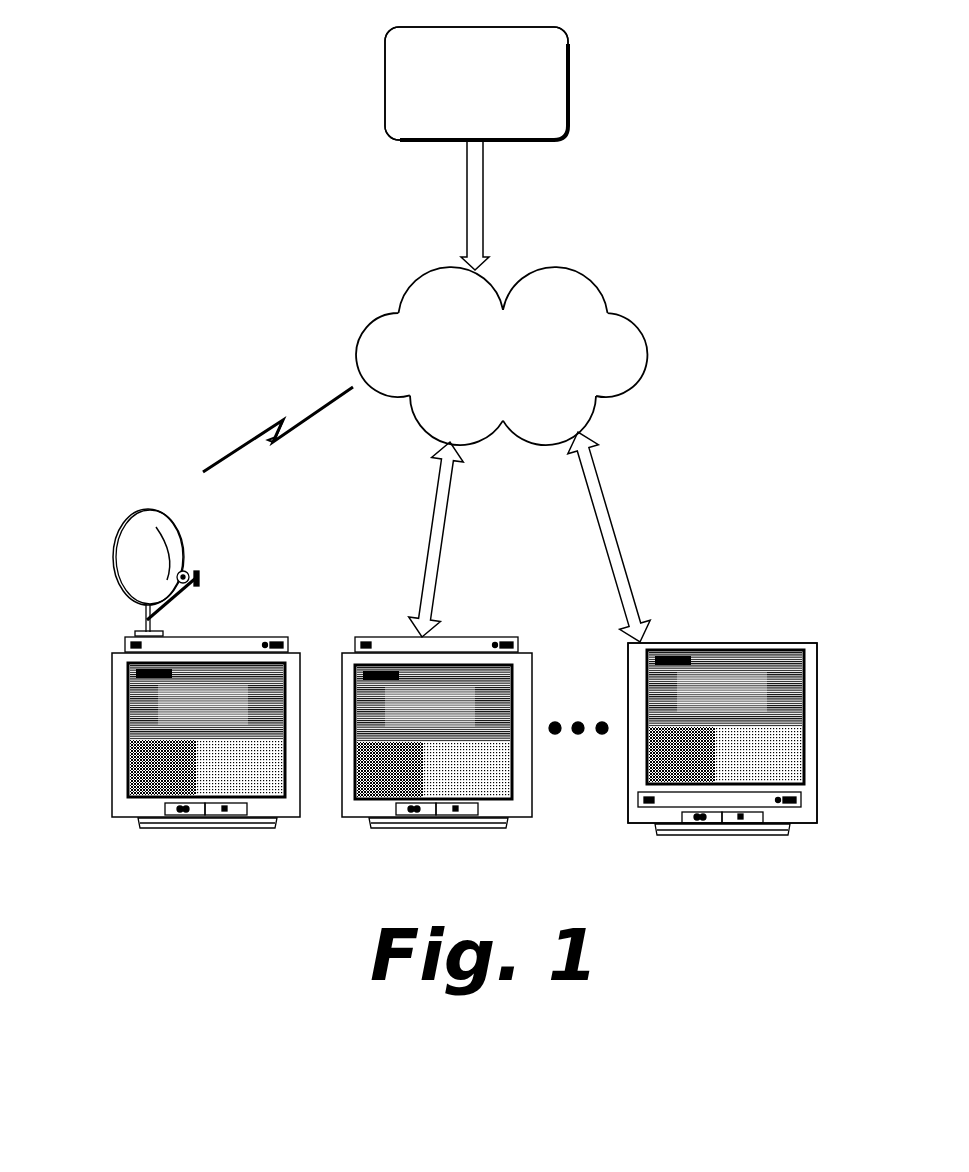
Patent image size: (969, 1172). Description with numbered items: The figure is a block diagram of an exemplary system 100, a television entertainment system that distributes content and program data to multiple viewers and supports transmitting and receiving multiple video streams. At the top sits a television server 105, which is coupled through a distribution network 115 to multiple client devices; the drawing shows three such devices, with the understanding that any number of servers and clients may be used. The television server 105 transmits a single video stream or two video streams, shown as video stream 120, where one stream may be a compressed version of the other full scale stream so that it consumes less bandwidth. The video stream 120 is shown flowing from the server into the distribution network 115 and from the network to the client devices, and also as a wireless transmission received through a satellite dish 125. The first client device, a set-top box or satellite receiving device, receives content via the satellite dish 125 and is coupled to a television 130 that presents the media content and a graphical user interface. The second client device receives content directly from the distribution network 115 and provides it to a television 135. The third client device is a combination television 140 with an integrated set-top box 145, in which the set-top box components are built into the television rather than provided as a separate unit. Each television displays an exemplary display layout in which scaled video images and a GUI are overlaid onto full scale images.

The system 100 is at (270, 75).
The television server 105 is at (476, 83).
The distribution network 115 is at (501, 356).
The video stream 120 is at (483, 207).
The satellite dish 125 is at (181, 541).
The television 130 is at (118, 738).
The television 135 is at (520, 798).
The television 140 is at (809, 760).
The integrated set-top box 145 is at (648, 808).